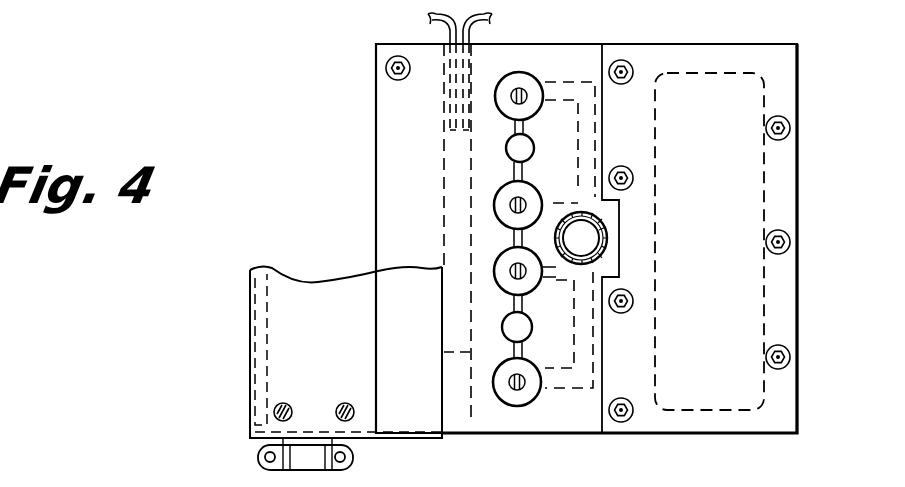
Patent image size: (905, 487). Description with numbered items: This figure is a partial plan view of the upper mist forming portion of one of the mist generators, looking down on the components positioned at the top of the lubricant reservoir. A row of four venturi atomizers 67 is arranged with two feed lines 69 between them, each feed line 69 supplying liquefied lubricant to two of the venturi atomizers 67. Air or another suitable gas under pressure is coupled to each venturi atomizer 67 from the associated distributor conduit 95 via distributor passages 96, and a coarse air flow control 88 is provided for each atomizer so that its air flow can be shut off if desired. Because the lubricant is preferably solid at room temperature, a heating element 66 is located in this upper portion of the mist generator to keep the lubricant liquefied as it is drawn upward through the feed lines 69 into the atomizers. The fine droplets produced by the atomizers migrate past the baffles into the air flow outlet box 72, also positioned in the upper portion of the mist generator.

The heating element 66 is at (455, 243).
The venturi atomizers 67 is at (547, 85).
The feed lines 69 is at (533, 150).
The air flow outlet box 72 is at (740, 340).
The coarse air flow control 88 is at (515, 88).
The distributor conduit 95 is at (607, 240).
The distributor passages 96 is at (594, 345).